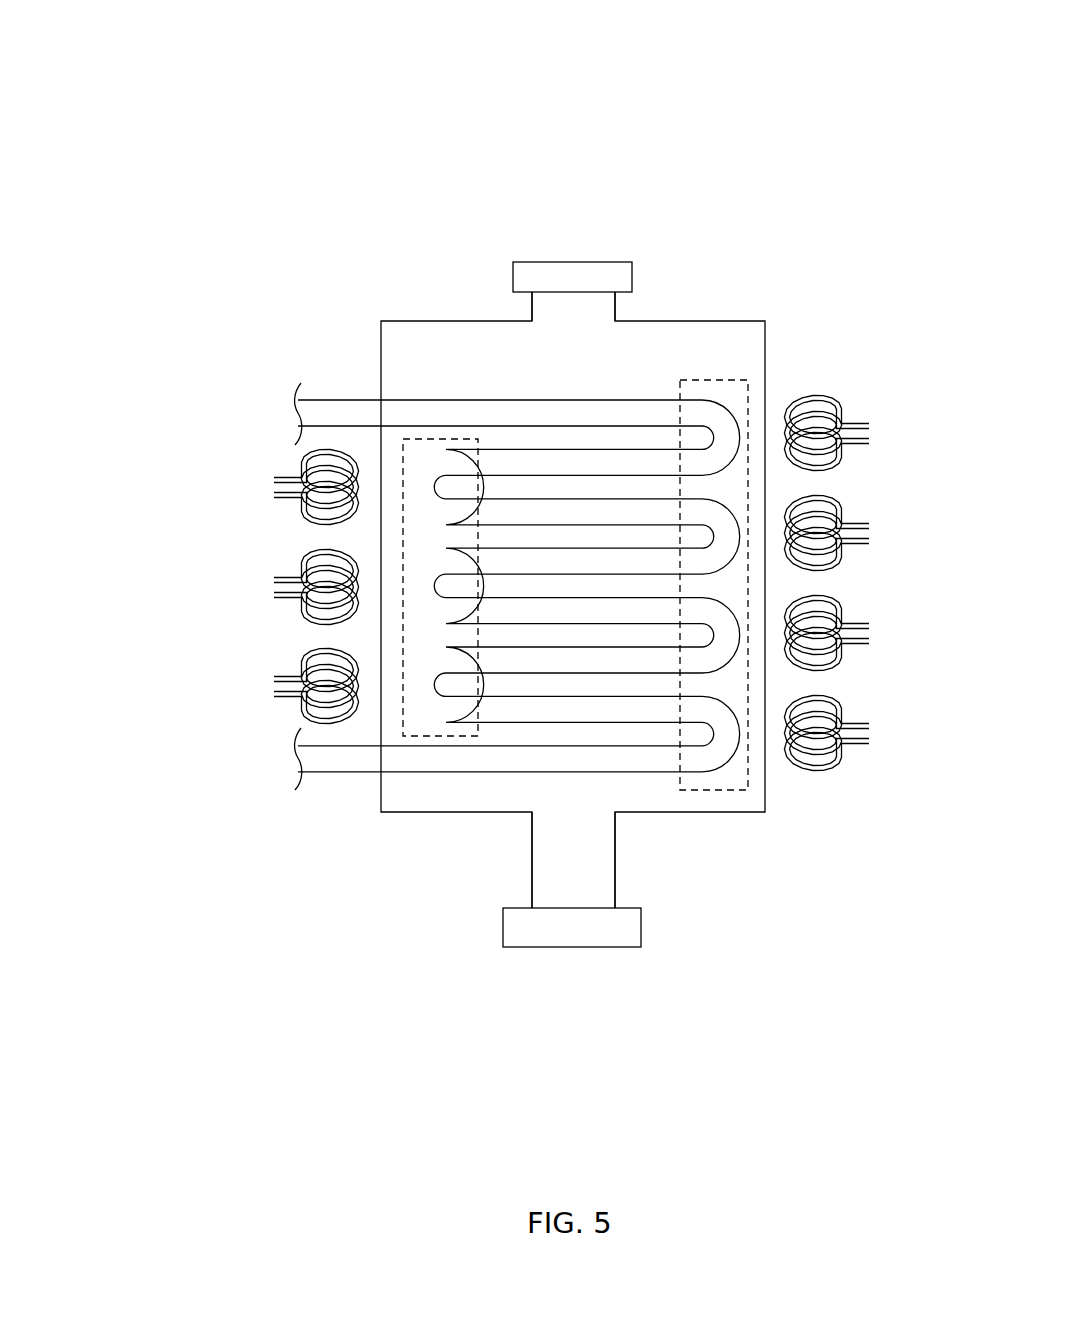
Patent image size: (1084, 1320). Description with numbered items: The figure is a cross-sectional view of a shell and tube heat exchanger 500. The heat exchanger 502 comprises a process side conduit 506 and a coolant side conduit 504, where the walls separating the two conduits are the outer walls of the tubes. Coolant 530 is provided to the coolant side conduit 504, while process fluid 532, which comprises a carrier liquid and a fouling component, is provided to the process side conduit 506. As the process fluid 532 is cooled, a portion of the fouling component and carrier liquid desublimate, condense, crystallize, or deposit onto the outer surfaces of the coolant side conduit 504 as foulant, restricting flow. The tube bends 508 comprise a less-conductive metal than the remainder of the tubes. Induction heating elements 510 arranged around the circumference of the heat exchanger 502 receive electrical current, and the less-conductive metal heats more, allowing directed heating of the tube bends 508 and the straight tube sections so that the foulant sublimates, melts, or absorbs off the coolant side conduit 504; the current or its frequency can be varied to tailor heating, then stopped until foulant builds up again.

The shell and tube heat exchanger cross-sectional view 500 is at (145, 52).
The heat exchanger 502 is at (412, 321).
The coolant side conduit 504 is at (337, 410).
The process side conduit 506 is at (728, 340).
The tube bends 508 is at (467, 437).
The induction heating elements 510 is at (842, 405).
The coolant 530 is at (283, 413).
The process fluid 532 is at (572, 253).